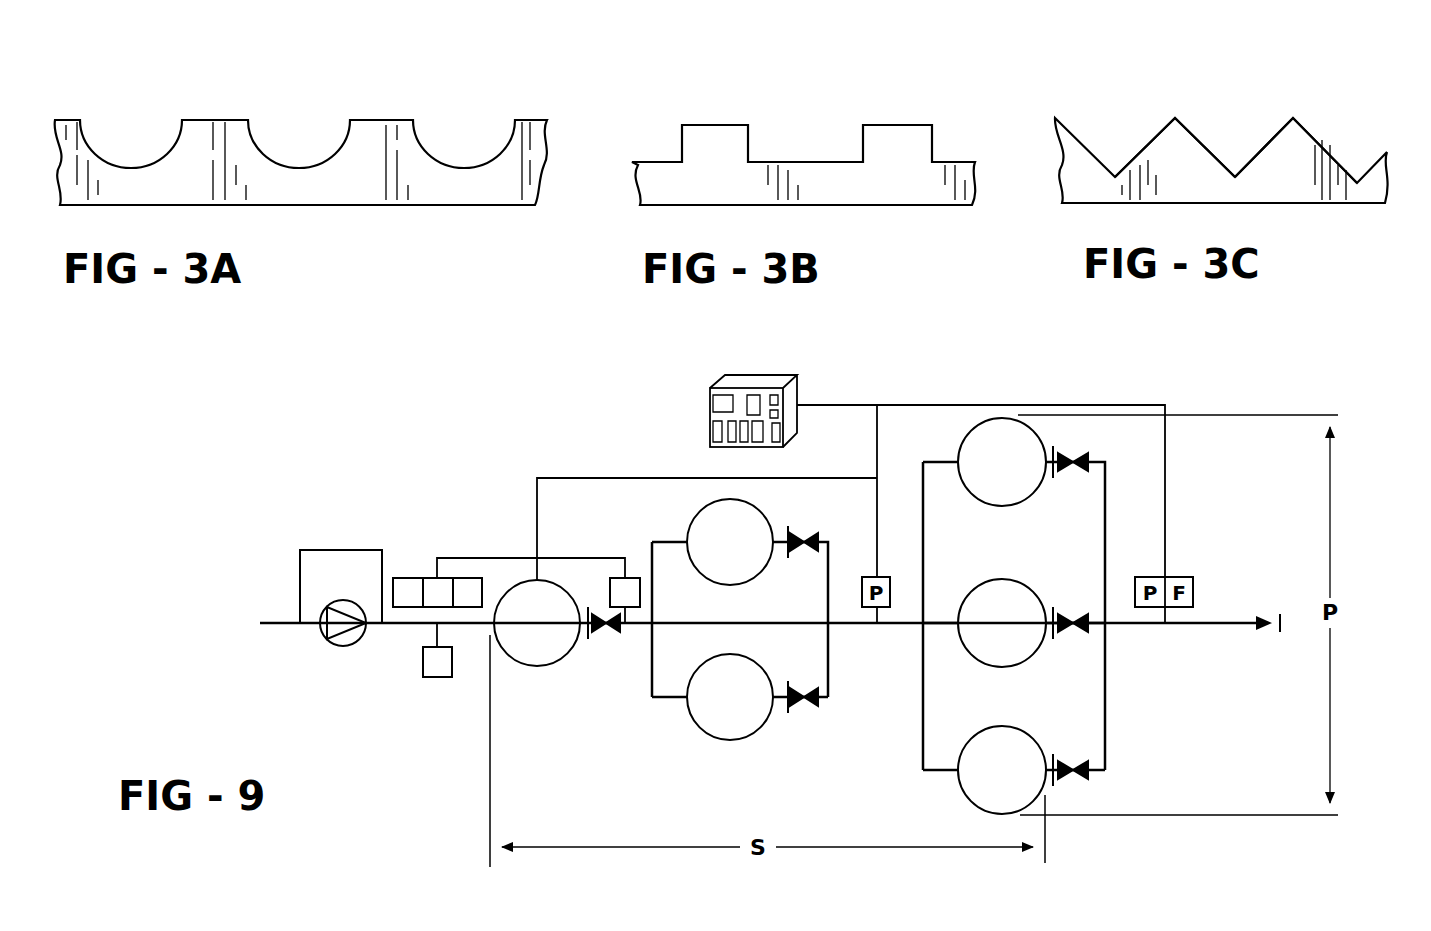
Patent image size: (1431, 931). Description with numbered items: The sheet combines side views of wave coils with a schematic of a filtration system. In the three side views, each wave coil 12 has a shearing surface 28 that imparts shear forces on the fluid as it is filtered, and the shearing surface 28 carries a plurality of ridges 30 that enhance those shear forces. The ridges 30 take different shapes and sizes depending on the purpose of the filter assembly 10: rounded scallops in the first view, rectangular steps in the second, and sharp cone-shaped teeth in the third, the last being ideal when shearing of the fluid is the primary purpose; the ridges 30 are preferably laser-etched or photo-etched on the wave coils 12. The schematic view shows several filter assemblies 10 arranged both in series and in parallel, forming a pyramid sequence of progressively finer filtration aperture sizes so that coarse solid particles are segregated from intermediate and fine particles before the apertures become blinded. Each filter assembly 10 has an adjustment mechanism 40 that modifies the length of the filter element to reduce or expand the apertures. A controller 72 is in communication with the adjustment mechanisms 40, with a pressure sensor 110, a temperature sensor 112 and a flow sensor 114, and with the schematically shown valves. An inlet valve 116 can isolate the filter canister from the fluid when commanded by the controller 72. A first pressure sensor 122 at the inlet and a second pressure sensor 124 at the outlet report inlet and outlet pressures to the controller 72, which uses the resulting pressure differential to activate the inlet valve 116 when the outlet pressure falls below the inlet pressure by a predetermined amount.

In FIG. 3A, the wave coil 12 is at (566, 104).
In FIG. 3B, the wave coil 12 is at (983, 102).
In FIG. 3C, the wave coil 12 is at (1371, 110).
In FIG. 3A, the ridges 30 is at (203, 120).
In FIG. 3B, the ridges 30 is at (688, 125).
In FIG. 3C, the ridges 30 is at (1175, 118).
In FIG. 3A, the shearing surface 28 is at (290, 197).
In FIG. 3B, the shearing surface 28 is at (843, 197).
In FIG. 3C, the shearing surface 28 is at (1265, 197).
In FIG. 9, the filter assembly 10 is at (769, 589).
In FIG. 9, the adjustment mechanism 40 is at (572, 672).
In FIG. 9, the controller 72 is at (790, 376).
In FIG. 9, the pressure sensor 110 is at (407, 578).
In FIG. 9, the temperature sensor 112 is at (424, 578).
In FIG. 9, the flow sensor 114 is at (470, 607).
In FIG. 9, the inlet valve 116 is at (355, 647).
In FIG. 9, the first pressure sensor 122 is at (423, 657).
In FIG. 9, the second pressure sensor 124 is at (638, 628).